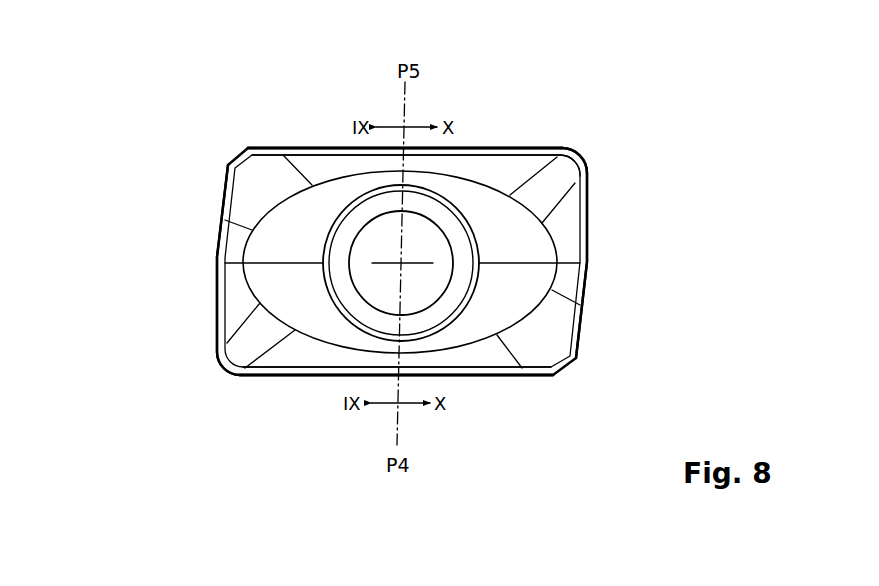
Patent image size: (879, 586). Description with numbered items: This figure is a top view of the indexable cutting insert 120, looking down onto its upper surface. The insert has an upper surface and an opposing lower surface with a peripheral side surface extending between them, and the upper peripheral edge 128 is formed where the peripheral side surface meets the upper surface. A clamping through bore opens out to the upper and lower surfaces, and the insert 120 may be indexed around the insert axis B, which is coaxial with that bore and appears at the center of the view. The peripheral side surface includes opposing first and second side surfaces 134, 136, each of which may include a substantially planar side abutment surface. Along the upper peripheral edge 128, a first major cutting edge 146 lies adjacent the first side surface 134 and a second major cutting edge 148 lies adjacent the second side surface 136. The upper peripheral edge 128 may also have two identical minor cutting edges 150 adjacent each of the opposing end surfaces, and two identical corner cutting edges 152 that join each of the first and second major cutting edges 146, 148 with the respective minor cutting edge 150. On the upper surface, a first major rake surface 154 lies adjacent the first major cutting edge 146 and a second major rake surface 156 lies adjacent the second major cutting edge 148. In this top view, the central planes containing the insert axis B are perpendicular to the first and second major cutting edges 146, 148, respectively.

The indexable cutting insert 120 is at (190, 182).
The upper peripheral edge 128 is at (317, 145).
The first side surface 134 is at (330, 378).
The second side surface 136 is at (495, 146).
The first major cutting edge 146 is at (293, 375).
The second major cutting edge 148 is at (528, 148).
The minor cutting edge 150 is at (587, 243).
The corner cutting edge 152 is at (582, 165).
The first major rake surface 154 is at (283, 352).
The second major rake surface 156 is at (502, 173).
The insert axis B is at (401, 263).